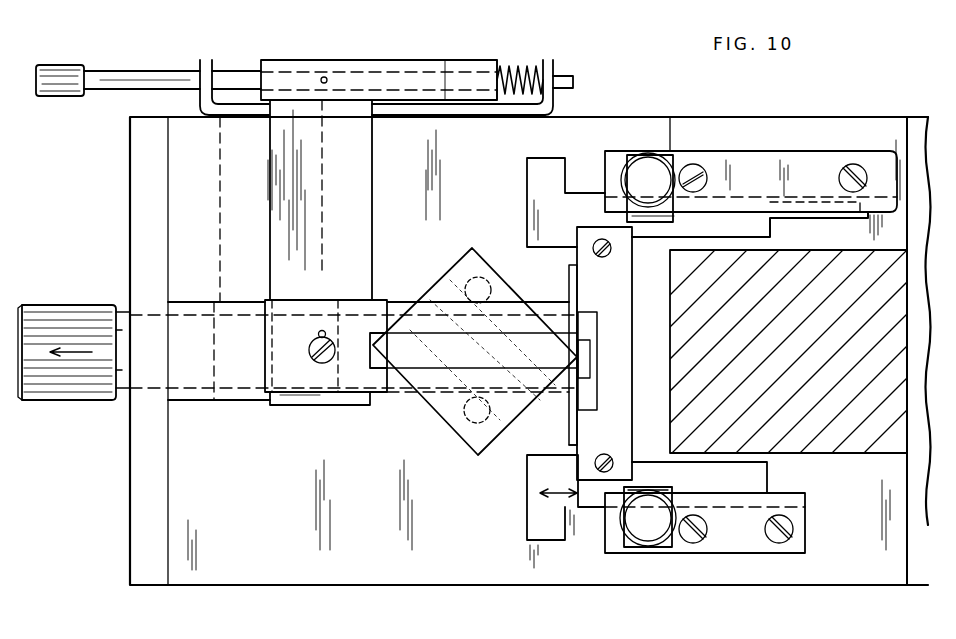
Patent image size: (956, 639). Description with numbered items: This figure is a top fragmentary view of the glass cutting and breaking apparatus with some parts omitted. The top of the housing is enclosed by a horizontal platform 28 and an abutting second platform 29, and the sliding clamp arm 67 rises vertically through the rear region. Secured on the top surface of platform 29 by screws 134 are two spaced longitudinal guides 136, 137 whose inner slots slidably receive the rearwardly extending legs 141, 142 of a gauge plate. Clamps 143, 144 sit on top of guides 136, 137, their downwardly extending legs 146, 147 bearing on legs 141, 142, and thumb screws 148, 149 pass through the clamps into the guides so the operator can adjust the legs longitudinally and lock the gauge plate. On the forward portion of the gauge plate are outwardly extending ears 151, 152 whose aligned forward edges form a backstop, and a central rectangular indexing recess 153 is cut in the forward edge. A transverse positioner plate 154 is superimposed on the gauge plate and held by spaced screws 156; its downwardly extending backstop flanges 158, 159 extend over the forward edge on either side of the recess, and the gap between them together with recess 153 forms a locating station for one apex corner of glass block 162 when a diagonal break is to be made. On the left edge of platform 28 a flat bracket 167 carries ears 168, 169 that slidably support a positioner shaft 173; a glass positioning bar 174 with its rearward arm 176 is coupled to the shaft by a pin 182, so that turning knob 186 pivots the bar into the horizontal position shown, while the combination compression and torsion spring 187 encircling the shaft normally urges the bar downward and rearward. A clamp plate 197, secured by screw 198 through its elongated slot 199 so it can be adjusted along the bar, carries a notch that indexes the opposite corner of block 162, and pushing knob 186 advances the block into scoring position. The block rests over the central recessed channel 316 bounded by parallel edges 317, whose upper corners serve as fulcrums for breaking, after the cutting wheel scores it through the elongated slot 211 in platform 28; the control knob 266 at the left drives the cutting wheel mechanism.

The platform 28 is at (360, 567).
The second platform 29 is at (860, 570).
The sliding clamp arm 67 is at (880, 444).
The screws 134 is at (700, 170).
The guide 136 is at (802, 162).
The guide 137 is at (803, 530).
The leg 141 is at (790, 234).
The leg 142 is at (762, 483).
The clamp 143 is at (670, 150).
The clamp 144 is at (672, 548).
The leg 146 is at (674, 221).
The leg 147 is at (660, 491).
The thumb screw 148 is at (632, 175).
The thumb screw 149 is at (632, 520).
The ear 151 is at (530, 182).
The ear 152 is at (530, 482).
The indexing recess 153 is at (593, 343).
The positioner plate 154 is at (622, 304).
The screws 156 is at (612, 254).
The backstop flange 158 is at (569, 270).
The backstop flange 159 is at (572, 412).
The glass block 162 is at (445, 395).
The bracket 167 is at (243, 106).
The ear 168 is at (552, 62).
The ear 169 is at (213, 62).
The positioner shaft 173 is at (155, 48).
The glass positioning bar 174 is at (283, 198).
The arm 176 is at (434, 60).
The pin 182 is at (325, 78).
The knob 186 is at (78, 62).
The combination compression and torsion spring 187 is at (518, 72).
The clamp plate 197 is at (316, 303).
The screw 198 is at (322, 364).
The elongated slot 199 is at (327, 332).
The elongated slot 211 is at (363, 370).
The control knob 266 is at (92, 312).
The recessed channel 316 is at (197, 375).
The edges 317 is at (248, 302).